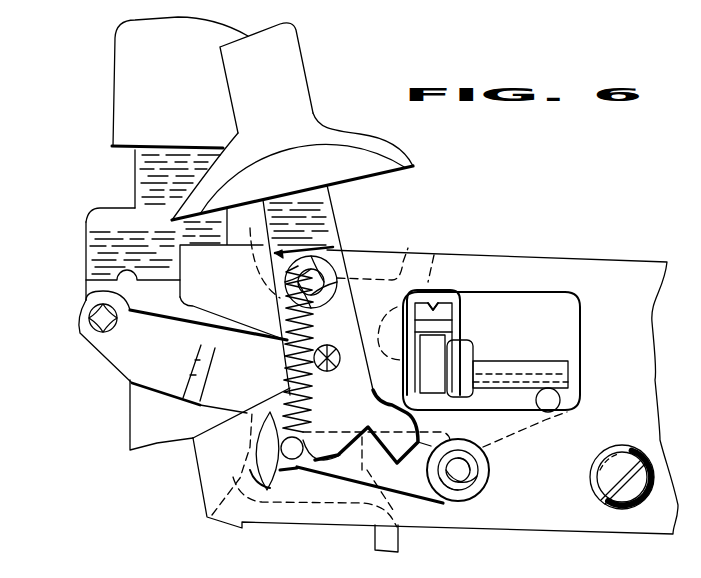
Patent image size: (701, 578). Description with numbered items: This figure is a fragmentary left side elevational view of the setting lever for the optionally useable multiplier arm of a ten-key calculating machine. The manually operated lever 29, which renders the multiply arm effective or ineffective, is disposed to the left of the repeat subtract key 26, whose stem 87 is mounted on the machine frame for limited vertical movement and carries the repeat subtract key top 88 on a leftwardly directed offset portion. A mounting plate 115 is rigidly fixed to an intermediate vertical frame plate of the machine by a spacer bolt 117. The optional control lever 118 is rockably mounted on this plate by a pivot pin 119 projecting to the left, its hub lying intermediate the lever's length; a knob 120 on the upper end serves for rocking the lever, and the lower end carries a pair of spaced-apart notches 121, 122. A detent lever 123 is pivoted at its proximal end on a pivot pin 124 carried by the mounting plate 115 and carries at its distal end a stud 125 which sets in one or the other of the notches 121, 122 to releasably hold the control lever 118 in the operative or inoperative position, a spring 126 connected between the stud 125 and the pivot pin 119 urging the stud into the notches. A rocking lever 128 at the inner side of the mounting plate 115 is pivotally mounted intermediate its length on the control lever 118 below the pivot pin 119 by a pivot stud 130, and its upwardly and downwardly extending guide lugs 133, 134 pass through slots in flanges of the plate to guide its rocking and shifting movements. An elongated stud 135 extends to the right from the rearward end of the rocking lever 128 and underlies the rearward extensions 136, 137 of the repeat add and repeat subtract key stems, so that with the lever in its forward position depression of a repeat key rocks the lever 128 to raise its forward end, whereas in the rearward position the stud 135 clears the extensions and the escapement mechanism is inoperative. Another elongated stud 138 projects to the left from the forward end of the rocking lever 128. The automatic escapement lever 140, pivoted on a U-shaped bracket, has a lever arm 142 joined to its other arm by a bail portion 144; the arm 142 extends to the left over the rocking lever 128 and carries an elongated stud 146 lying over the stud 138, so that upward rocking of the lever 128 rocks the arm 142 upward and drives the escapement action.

The repeat subtract key 26 is at (134, 151).
The manually operated lever 29 is at (317, 87).
The stem of the repeat subtract key 87 is at (135, 185).
The repeat subtract key top 88 is at (117, 110).
The mounting plate 115 is at (550, 527).
The spacer bolt 117 is at (628, 447).
The optional control lever 118 is at (330, 205).
The pivot pin 119 is at (310, 280).
The knob 120 is at (240, 113).
The notch 121 is at (362, 443).
The notch 122 is at (317, 460).
The detent lever 123 is at (443, 504).
The pivot pin 124 is at (480, 470).
The stud 125 is at (280, 448).
The spring 126 is at (291, 389).
The rocking lever 128 is at (202, 405).
The pivot stud 130 is at (348, 337).
The upwardly extending guide lug 133 is at (412, 247).
The downwardly extending guide lug 134 is at (375, 533).
The elongated stud 135 is at (93, 317).
The rearward extension of the repeat add key stem 136 is at (107, 210).
The rearward extension of the repeat subtract key stem 137 is at (85, 226).
The elongated stud 138 is at (540, 398).
The automatic escapement lever 140 is at (463, 318).
The lever arm 142 is at (465, 335).
The bail portion 144 is at (430, 305).
The elongated stud 146 is at (518, 360).